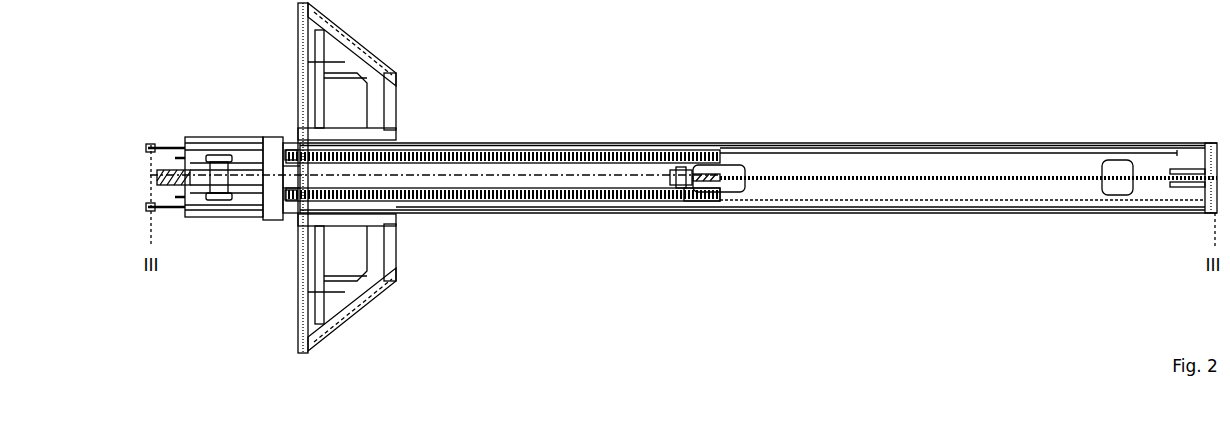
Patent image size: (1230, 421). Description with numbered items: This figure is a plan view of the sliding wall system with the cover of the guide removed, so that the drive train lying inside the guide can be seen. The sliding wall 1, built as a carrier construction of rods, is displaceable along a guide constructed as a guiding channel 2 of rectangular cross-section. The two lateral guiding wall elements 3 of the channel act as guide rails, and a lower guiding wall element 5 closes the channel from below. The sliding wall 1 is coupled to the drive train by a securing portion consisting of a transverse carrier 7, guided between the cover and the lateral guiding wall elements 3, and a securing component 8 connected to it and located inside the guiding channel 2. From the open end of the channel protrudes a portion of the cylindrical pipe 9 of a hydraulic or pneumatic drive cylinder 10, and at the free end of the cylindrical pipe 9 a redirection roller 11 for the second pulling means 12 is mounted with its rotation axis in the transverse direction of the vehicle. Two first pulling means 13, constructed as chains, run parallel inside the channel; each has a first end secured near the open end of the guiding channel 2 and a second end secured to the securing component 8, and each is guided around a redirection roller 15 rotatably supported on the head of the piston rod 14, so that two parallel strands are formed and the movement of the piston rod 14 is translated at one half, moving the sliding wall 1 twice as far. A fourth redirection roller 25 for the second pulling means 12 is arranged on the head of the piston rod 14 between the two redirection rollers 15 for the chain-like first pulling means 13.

The sliding wall 1 is at (293, 62).
The guiding channel 2 is at (825, 141).
The lateral guiding wall elements 3 is at (770, 143).
The lower guiding wall element 5 is at (1000, 160).
The transverse carrier 7 is at (273, 150).
The securing component 8 is at (290, 184).
The cylindrical pipe 9 is at (435, 172).
The drive cylinder 10 is at (552, 172).
The redirection roller 11 is at (146, 175).
The second pulling means 12 is at (193, 183).
The first pulling means 13 is at (498, 190).
The piston rod 14 is at (683, 167).
The redirection roller 15 is at (717, 181).
The fourth redirection roller 25 is at (690, 200).